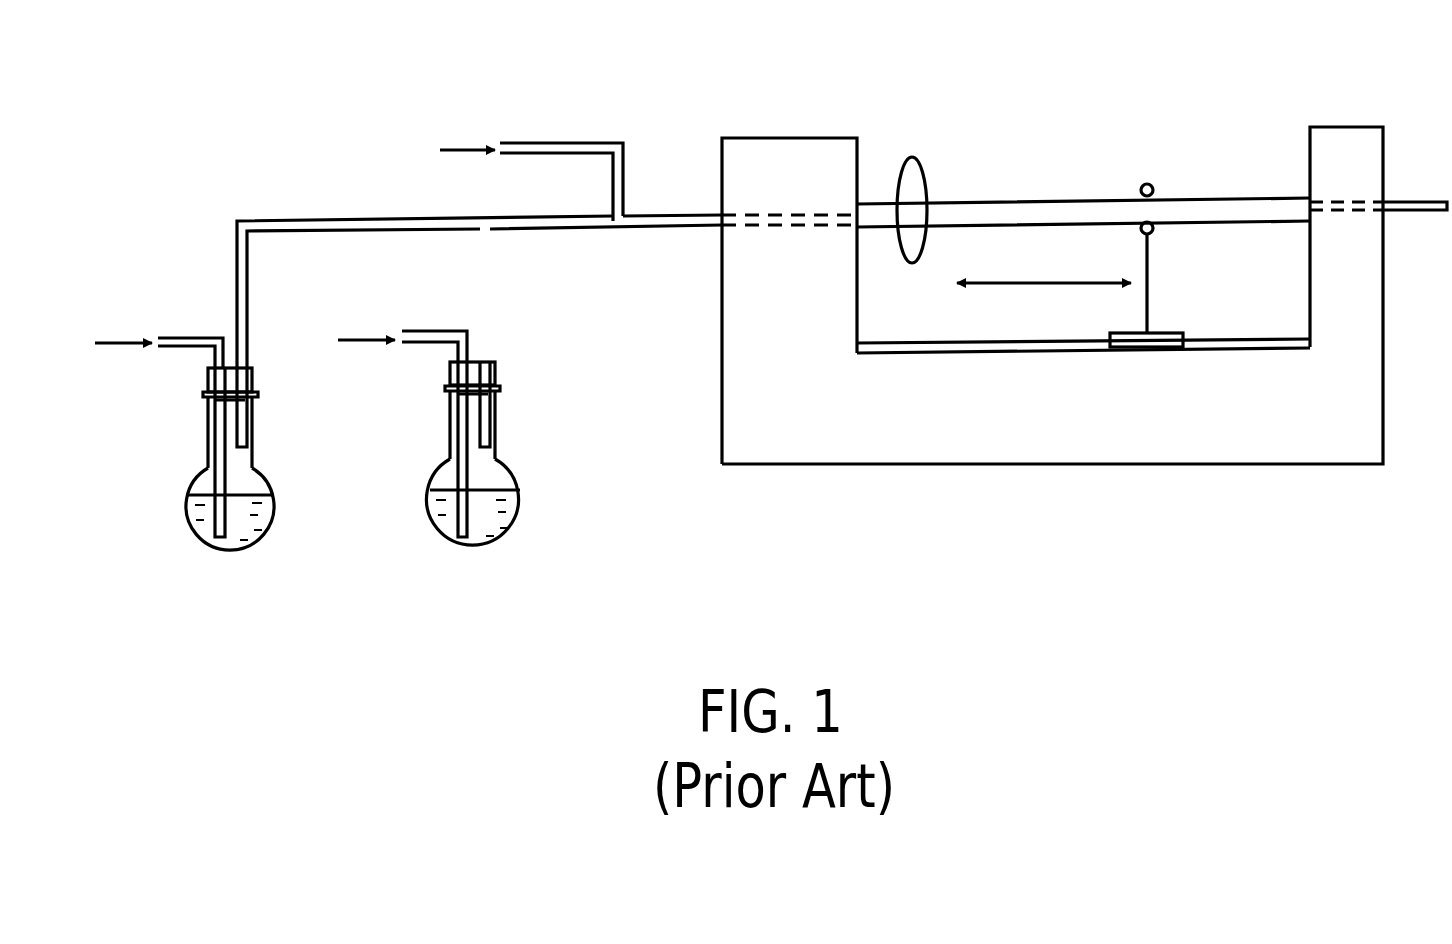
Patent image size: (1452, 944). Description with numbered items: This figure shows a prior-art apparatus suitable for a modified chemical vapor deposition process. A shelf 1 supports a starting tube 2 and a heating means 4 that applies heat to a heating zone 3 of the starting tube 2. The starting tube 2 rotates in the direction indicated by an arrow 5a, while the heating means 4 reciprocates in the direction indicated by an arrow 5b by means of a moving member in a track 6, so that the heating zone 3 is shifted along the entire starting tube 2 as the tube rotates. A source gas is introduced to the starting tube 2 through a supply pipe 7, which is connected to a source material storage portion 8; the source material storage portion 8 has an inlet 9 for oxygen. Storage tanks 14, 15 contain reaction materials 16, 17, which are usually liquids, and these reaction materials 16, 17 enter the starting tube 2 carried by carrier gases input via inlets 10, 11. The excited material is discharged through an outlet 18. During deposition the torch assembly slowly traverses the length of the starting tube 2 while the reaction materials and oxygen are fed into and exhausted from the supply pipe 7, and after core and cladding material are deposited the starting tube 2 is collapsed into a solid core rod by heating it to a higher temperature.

The shelf 1 is at (775, 170).
The starting tube 2 is at (1052, 218).
The heating zone 3 is at (1152, 184).
The heating means 4 is at (1168, 343).
The arrow 5a is at (915, 163).
The arrow 5b is at (1044, 267).
The track 6 is at (935, 355).
The supply pipe 7 is at (755, 217).
The source material storage portion 8 is at (280, 140).
The inlet 9 is at (592, 143).
The inlet 10 is at (187, 336).
The inlet 11 is at (430, 331).
The storage tank 14 is at (230, 552).
The storage tank 15 is at (473, 546).
The reaction material 16 is at (197, 496).
The reaction material 17 is at (444, 482).
The outlet 18 is at (1417, 198).